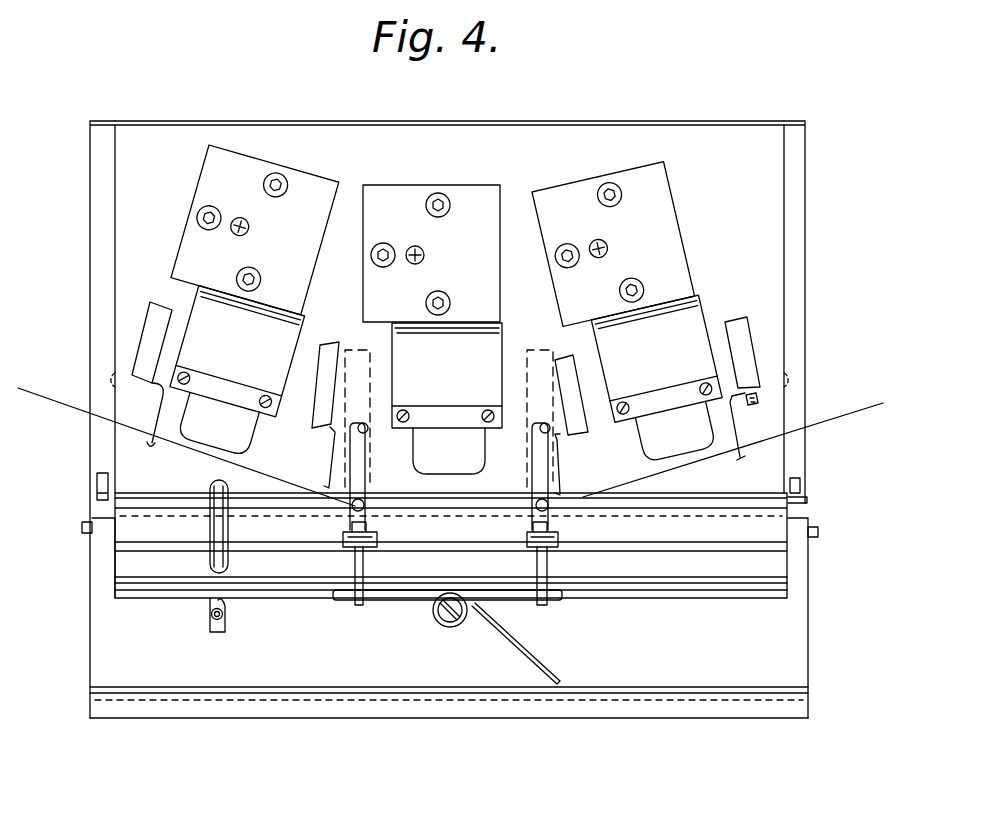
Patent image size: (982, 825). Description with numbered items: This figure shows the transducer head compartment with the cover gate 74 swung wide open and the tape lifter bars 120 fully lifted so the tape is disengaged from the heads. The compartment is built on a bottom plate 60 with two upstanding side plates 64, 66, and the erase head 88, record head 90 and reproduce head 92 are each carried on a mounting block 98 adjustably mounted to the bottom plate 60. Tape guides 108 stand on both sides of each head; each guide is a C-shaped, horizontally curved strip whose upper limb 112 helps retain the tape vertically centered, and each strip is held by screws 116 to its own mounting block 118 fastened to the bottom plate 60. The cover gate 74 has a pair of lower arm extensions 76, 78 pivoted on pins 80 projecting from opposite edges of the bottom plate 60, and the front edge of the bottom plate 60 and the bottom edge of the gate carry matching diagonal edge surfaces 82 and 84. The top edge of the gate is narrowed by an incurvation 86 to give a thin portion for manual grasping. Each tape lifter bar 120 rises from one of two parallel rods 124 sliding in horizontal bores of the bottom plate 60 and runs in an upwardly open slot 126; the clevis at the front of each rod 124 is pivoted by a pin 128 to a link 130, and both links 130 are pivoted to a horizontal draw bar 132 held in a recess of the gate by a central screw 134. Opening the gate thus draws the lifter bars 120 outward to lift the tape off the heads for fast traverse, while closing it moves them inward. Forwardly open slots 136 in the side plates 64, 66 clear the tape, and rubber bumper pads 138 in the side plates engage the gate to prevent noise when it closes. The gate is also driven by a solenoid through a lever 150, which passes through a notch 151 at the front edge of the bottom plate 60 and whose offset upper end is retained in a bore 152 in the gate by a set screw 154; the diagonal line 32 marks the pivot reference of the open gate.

The pivot line 32 is at (837, 420).
The bottom plate 60 is at (681, 130).
The side plate 64 is at (806, 242).
The side plate 66 is at (90, 240).
The cover gate 74 is at (556, 718).
The lower arm extension 76 is at (800, 572).
The lower arm extension 78 is at (100, 565).
The pin 80 is at (82, 530).
The diagonal edge surface 82 is at (702, 532).
The diagonal edge surface 84 is at (748, 579).
The incurvation 86 is at (369, 716).
The erase head 88 is at (230, 373).
The record head 90 is at (452, 466).
The reproduce head 92 is at (661, 381).
The mounting block 98 is at (196, 190).
The tape guide 108 is at (140, 428).
The upper limb 112 is at (737, 447).
The screw 116 is at (753, 405).
The mounting block 118 is at (158, 310).
The tape lifter bar 120 is at (360, 499).
The rod 124 is at (343, 538).
The slot 126 is at (366, 424).
The pin 128 is at (367, 548).
The link 130 is at (355, 568).
The draw bar 132 is at (515, 598).
The screw 134 is at (453, 622).
The slot 136 is at (108, 382).
The rubber bumper pad 138 is at (97, 495).
The lever 150 is at (213, 560).
The notch 151 is at (207, 487).
The bore 152 is at (222, 600).
The set screw 154 is at (210, 616).